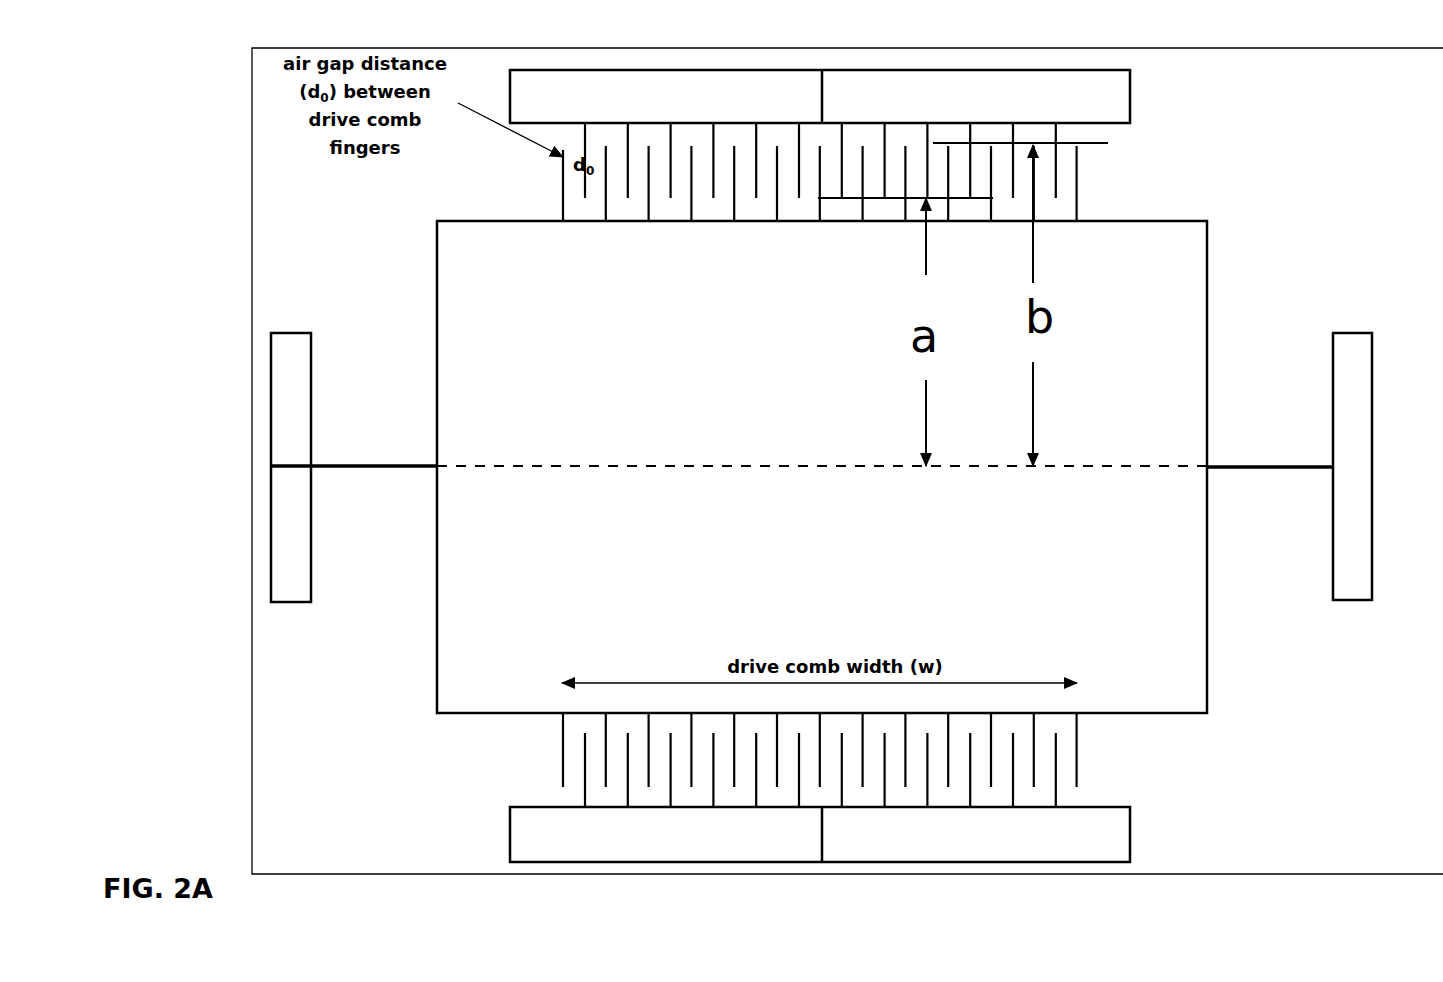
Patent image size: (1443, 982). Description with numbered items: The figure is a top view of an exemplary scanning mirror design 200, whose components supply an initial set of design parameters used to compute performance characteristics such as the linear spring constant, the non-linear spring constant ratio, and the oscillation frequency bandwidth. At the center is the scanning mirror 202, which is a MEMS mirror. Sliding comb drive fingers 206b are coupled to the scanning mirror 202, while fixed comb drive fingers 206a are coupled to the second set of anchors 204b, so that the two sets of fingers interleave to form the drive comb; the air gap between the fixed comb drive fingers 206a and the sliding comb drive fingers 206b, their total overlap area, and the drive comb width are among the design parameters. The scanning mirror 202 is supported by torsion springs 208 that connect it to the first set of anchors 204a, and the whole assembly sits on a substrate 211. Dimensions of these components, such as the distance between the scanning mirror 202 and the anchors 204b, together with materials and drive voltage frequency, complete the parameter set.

The scanning mirror design 200 is at (137, 43).
The scanning mirror 202 is at (553, 315).
The first set of anchors 204a is at (291, 603).
The second set of anchors 204b is at (1132, 98).
The fixed comb drive fingers 206a is at (1059, 178).
The sliding comb drive fingers 206b is at (558, 188).
The torsion springs 208 is at (1269, 470).
The substrate 211 is at (361, 273).